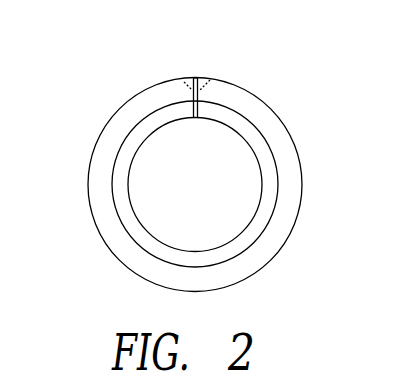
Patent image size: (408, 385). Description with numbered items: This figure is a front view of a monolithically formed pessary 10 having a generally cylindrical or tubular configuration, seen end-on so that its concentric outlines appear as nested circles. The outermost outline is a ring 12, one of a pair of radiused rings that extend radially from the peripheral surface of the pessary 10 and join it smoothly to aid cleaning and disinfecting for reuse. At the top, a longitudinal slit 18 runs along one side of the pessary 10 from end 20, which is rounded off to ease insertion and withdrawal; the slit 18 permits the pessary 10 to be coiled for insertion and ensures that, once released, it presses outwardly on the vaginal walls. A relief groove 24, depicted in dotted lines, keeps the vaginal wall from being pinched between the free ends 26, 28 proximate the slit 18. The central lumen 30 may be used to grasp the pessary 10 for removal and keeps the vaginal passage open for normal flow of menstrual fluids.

The pessary 10 is at (130, 57).
The ring 12 is at (290, 197).
The longitudinal slit 18 is at (198, 78).
The end 20 is at (263, 153).
The relief groove 24 is at (205, 87).
The free end 26 is at (193, 111).
The free end 28 is at (200, 111).
The lumen 30 is at (182, 192).